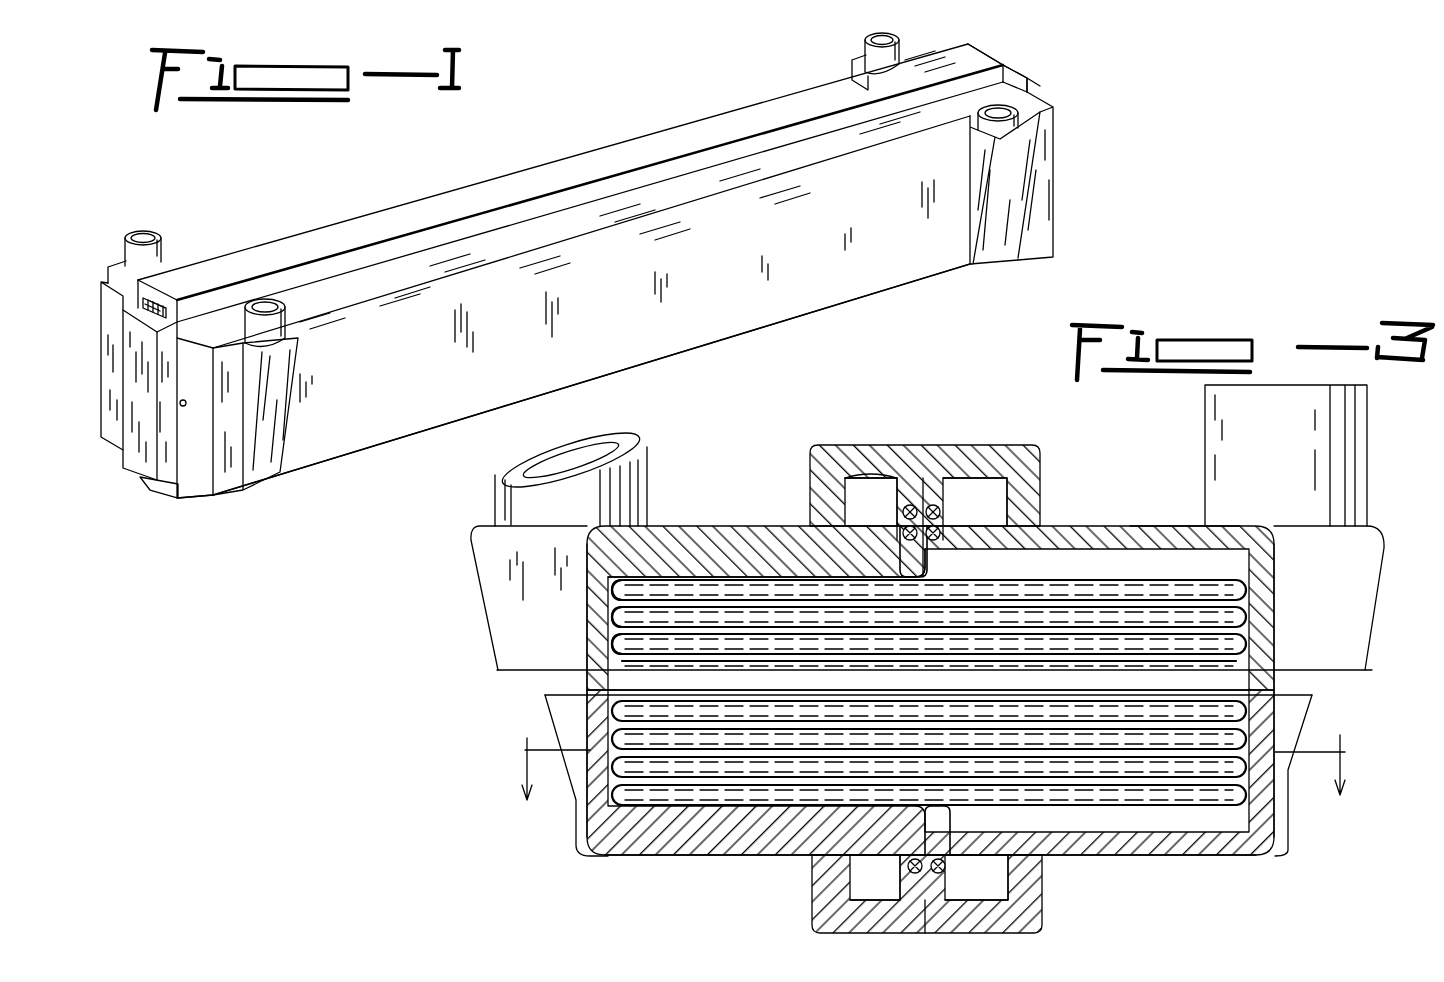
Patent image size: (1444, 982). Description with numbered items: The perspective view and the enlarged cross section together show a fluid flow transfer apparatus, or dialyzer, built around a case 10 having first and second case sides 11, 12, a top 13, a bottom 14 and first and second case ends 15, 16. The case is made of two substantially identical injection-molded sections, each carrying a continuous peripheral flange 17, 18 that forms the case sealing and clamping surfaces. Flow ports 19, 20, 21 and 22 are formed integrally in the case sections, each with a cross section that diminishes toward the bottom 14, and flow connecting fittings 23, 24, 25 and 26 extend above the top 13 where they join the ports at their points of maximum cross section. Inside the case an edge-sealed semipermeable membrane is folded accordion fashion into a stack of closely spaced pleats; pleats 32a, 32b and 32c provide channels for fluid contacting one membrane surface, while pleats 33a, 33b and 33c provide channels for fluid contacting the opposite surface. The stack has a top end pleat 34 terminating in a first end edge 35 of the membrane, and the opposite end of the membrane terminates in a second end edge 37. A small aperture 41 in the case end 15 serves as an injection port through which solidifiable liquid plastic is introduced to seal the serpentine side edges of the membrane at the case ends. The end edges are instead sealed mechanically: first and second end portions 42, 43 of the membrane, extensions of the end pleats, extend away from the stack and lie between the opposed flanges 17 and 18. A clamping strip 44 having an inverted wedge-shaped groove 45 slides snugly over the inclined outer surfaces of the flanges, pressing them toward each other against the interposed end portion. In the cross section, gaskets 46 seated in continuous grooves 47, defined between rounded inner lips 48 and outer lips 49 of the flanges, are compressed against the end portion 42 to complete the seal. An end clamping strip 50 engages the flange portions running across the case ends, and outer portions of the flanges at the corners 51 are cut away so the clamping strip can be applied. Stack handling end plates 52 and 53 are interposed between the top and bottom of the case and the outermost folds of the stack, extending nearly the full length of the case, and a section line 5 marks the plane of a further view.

In FIG. 3, the section line 5- 5 is at (933, 767).
In FIG. 1, the case 10 is at (382, 207).
In FIG. 1, the first case side 11 is at (619, 147).
In FIG. 3, the first case side 11 is at (595, 723).
In FIG. 1, the second case side 12 is at (752, 240).
In FIG. 3, the second case side 12 is at (1262, 714).
In FIG. 1, the top 13 is at (1030, 86).
In FIG. 3, the top 13 is at (1175, 526).
In FIG. 1, the bottom 14 is at (700, 360).
In FIG. 3, the bottom 14 is at (1152, 853).
In FIG. 1, the first case end 15 is at (106, 328).
In FIG. 1, the second case end 16 is at (1054, 228).
In FIG. 3, the continuous peripheral flange 17 is at (850, 490).
In FIG. 3, the continuous peripheral flange 18 is at (1000, 496).
In FIG. 1, the flow port 19 is at (288, 356).
In FIG. 1, the flow port 20 is at (1015, 172).
In FIG. 3, the flow port 20 is at (1372, 562).
In FIG. 1, the flow port 21 is at (120, 267).
In FIG. 1, the flow port 22 is at (852, 63).
In FIG. 3, the flow port 22 is at (482, 560).
In FIG. 1, the flow connecting fitting 23 is at (288, 330).
In FIG. 1, the flow connecting fitting 24 is at (978, 116).
In FIG. 3, the flow connecting fitting 24 is at (1245, 482).
In FIG. 1, the flow connecting fitting 25 is at (150, 256).
In FIG. 1, the flow connecting fitting 26 is at (902, 42).
In FIG. 3, the flow connecting fitting 26 is at (575, 502).
In FIG. 3, the pleat 32a is at (1258, 590).
In FIG. 3, the pleat 32b is at (1258, 617).
In FIG. 3, the pleat 32c is at (1258, 644).
In FIG. 3, the pleat 33a is at (612, 592).
In FIG. 3, the pleat 33b is at (612, 619).
In FIG. 3, the pleat 33c is at (612, 646).
In FIG. 3, the first end pleat 34 is at (650, 576).
In FIG. 3, the first end edge 35 is at (918, 474).
In FIG. 3, the second end edge 37 is at (922, 920).
In FIG. 1, the small aperture 41 is at (186, 401).
In FIG. 3, the first end portion 42 is at (926, 568).
In FIG. 3, the second end portion 43 is at (948, 820).
In FIG. 1, the clamping strip 44 is at (150, 488).
In FIG. 3, the clamping strip 44 is at (822, 456).
In FIG. 3, the inverted wedge-shaped groove 45 is at (860, 510).
In FIG. 3, the gasket 46 is at (936, 508).
In FIG. 3, the continuous groove 47 is at (945, 536).
In FIG. 3, the inner lip 48 is at (905, 545).
In FIG. 3, the outer lip 49 is at (920, 505).
In FIG. 1, the end clamping strip 50 is at (128, 455).
In FIG. 1, the flange corner 51 is at (180, 298).
In FIG. 3, the stack handling end plate 52 is at (714, 538).
In FIG. 3, the stack handling end plate 53 is at (705, 818).